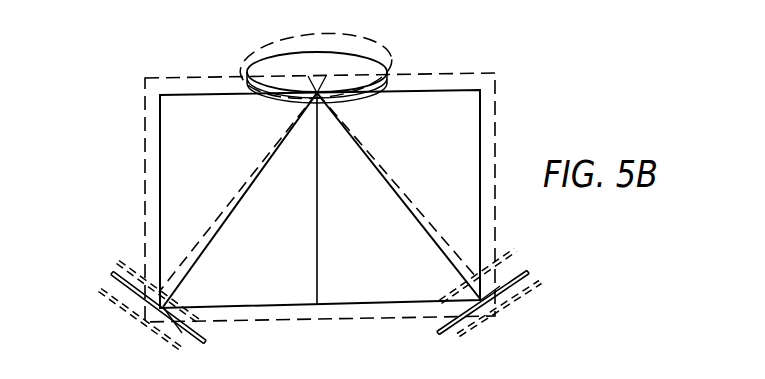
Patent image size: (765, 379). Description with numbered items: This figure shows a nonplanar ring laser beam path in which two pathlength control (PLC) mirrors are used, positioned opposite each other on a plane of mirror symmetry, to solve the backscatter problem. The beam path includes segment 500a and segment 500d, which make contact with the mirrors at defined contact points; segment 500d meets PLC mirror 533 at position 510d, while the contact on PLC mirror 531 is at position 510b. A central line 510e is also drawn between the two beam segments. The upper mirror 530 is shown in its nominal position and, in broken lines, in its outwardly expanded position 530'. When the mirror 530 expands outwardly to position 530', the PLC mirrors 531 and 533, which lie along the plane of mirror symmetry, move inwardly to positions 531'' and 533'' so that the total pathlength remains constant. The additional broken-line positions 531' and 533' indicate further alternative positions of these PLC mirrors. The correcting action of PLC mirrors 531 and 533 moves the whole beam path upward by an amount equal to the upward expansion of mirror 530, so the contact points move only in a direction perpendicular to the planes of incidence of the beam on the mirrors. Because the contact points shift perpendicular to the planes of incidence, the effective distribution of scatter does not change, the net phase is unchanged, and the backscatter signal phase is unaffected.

The mirror 530 is at (350, 87).
The expanded position of mirror 530' is at (336, 65).
The light beam 510e is at (319, 100).
The path segment 500a is at (228, 218).
The path segment 500d is at (416, 218).
The PLC mirror 531 is at (143, 297).
The mirror (alternate position) 531' is at (111, 318).
The inward position of PLC mirror 531'' is at (141, 273).
The contact point position 510b is at (182, 333).
The PLC mirror 533 is at (498, 287).
The mirror (alternate position) 533' is at (526, 305).
The inward position of PLC mirror 533'' is at (497, 260).
The contact point position 510d is at (524, 274).